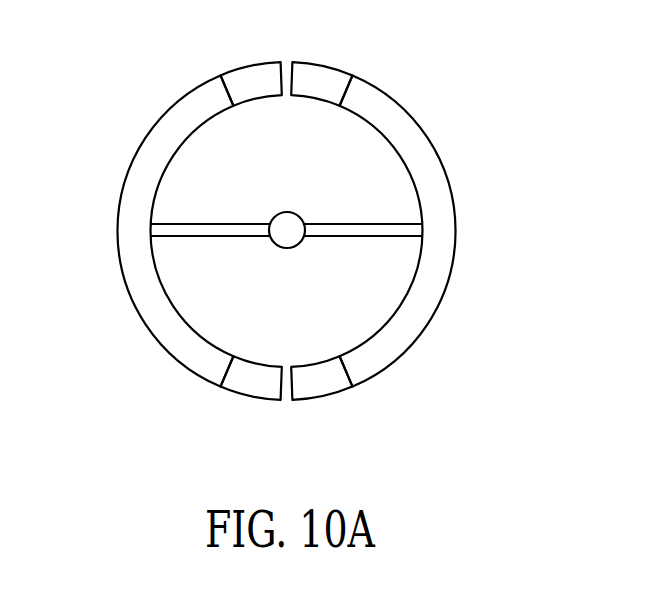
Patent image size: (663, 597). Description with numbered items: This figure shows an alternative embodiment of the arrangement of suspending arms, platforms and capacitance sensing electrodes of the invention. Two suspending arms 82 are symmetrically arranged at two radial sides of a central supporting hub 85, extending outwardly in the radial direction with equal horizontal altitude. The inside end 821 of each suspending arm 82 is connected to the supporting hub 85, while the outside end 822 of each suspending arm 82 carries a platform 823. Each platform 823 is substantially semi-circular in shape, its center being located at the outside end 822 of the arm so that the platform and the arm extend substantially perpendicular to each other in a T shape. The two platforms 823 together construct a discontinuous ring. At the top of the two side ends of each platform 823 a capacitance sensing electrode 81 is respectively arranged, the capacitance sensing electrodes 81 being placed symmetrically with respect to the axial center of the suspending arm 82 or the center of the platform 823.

The capacitance sensing electrode 81 is at (250, 70).
The platform 823 is at (143, 142).
The suspending arm 82 is at (220, 228).
The outside end 822 is at (158, 238).
The supporting hub 85 is at (287, 212).
The inside end 821 is at (308, 240).